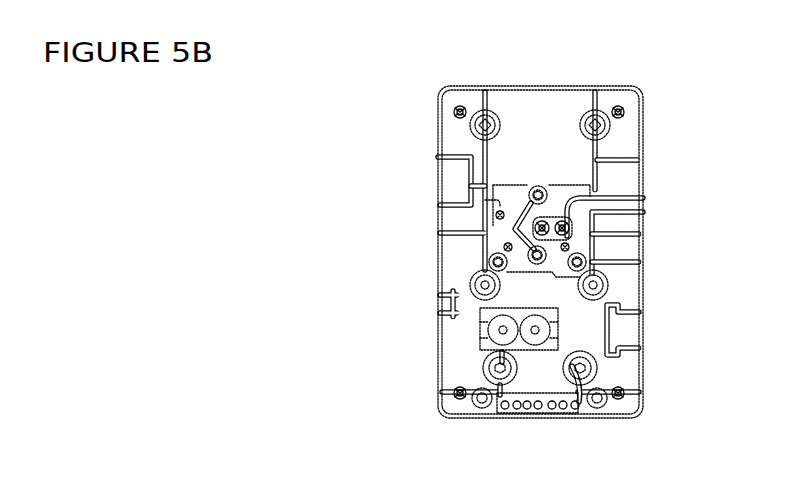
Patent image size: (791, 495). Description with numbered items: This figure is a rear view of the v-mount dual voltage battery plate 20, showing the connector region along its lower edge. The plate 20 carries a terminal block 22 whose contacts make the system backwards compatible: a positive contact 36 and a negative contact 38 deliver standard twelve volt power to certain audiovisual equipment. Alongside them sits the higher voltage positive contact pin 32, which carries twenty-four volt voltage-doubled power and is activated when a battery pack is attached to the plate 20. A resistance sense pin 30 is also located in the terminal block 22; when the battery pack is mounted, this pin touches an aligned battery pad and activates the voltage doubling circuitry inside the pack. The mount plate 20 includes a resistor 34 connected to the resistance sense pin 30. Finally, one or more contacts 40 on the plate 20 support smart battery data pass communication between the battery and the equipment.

The v-mount dual voltage battery plate 20 is at (438, 128).
The contacts 40 is at (540, 396).
The positive contact 36 is at (504, 409).
The higher voltage positive contact pin 32 is at (516, 409).
The terminal block 22 is at (528, 409).
The resistor 34 is at (562, 430).
The resistance sense pin 30 is at (566, 410).
The negative contact 38 is at (576, 409).